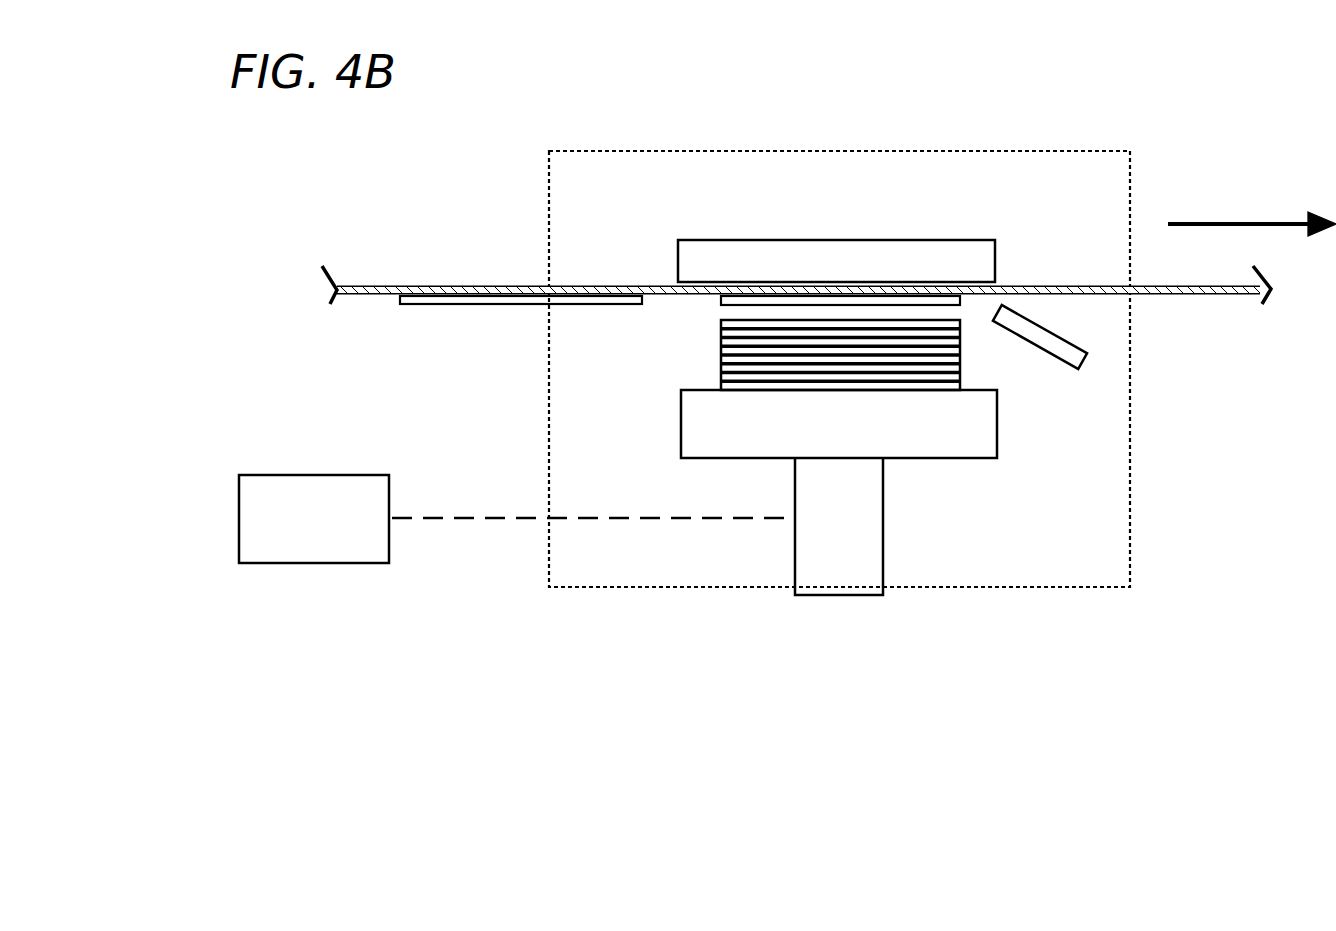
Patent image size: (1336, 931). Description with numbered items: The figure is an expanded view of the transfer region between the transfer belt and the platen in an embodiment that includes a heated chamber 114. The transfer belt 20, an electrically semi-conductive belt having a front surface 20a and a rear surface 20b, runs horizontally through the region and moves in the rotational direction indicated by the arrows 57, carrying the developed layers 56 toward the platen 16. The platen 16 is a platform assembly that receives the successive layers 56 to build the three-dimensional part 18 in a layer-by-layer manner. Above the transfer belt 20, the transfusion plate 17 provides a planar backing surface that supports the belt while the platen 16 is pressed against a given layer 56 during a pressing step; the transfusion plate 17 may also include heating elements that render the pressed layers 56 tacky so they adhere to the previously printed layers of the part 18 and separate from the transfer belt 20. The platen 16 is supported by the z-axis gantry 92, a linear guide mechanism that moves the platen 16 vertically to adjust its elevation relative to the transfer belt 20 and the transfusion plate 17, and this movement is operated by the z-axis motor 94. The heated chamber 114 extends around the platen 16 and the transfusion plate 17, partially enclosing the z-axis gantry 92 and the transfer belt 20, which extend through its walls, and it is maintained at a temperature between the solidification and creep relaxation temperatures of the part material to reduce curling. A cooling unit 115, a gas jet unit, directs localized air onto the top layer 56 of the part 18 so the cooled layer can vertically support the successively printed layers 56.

The heated chamber 114 is at (728, 151).
The transfer belt 20 is at (468, 285).
The front surface 20a is at (1188, 290).
The rear surface 20b is at (1188, 290).
The arrows 57 is at (1263, 222).
The transfusion plate 17 is at (996, 258).
The layers 56 is at (467, 296).
The 3D part 18 is at (960, 330).
The cooling unit 115 is at (1057, 362).
The platen 16 is at (681, 407).
The z-axis gantry 92 is at (873, 504).
The z-axis motor 94 is at (323, 475).